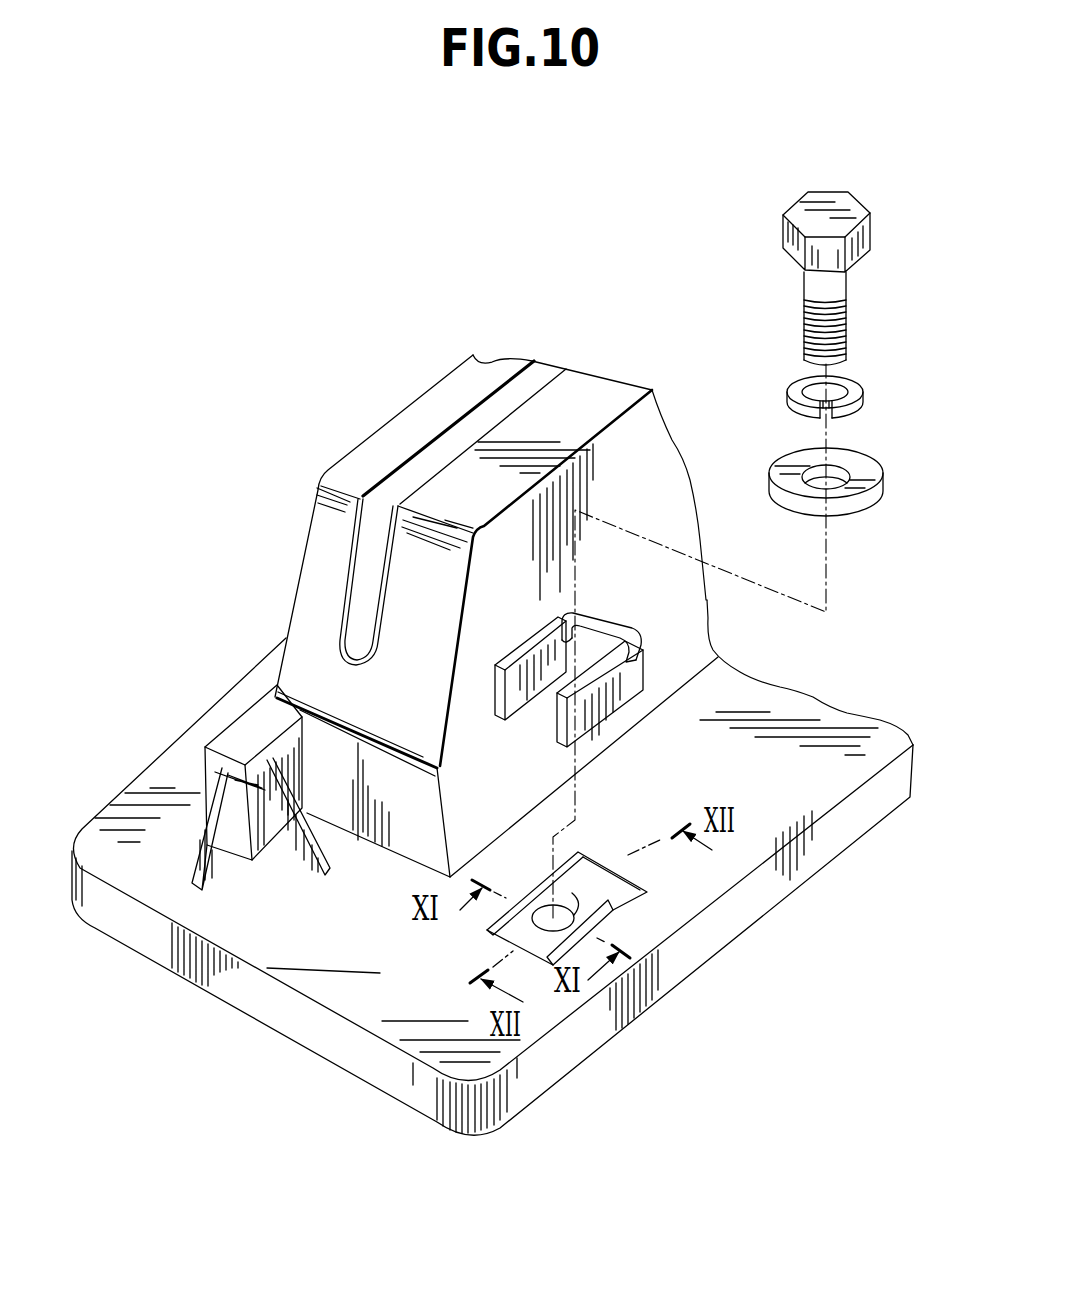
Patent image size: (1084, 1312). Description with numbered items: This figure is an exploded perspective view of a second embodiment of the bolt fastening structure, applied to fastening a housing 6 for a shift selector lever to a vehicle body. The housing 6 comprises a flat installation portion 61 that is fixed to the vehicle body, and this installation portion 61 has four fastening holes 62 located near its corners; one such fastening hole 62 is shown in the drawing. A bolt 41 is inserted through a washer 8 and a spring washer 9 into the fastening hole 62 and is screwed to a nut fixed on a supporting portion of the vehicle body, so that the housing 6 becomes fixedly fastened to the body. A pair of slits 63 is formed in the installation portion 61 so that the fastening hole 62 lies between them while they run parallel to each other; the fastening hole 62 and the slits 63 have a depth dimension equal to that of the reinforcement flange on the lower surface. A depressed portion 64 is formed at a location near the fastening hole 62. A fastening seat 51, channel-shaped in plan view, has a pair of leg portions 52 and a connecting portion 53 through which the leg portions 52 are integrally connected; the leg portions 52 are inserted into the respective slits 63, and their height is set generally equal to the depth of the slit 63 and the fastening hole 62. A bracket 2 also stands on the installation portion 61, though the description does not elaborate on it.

The bracket 2 is at (243, 725).
The housing 6 is at (350, 426).
The washer 8 is at (870, 474).
The spring washer 9 is at (858, 391).
The bolt 41 is at (864, 240).
The fastening seat 51 is at (644, 691).
The leg portions 52 is at (522, 697).
The connecting portion 53 is at (615, 626).
The flat installation portion 61 is at (817, 777).
The fastening hole 62 is at (545, 926).
The slits 63 is at (490, 932).
The depressed portion 64 is at (593, 883).